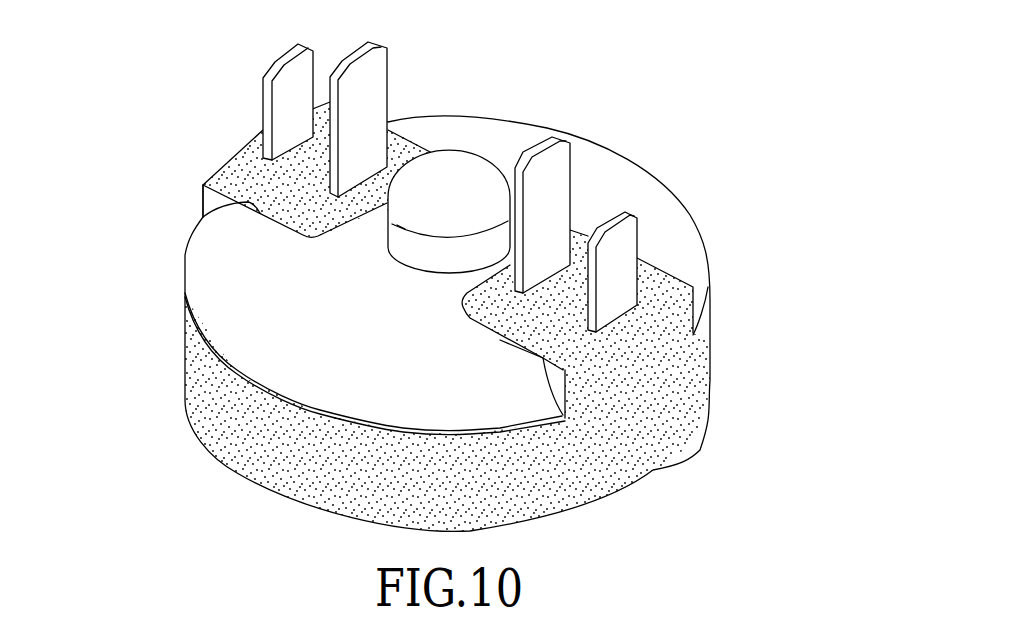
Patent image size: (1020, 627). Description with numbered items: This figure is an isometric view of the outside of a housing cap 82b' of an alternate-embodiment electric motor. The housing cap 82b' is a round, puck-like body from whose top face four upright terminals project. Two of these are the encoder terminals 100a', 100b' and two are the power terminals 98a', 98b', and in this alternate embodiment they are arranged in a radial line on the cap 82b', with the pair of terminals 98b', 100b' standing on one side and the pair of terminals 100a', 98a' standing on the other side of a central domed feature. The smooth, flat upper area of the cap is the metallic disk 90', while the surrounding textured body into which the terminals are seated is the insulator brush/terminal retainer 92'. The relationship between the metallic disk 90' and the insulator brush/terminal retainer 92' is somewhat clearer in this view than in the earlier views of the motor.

The housing cap 82b' is at (466, 343).
The metallic disk 90' is at (345, 310).
The insulator brush/terminal retainer 92' is at (596, 262).
The power terminal 98a' is at (689, 272).
The power terminal 98b' is at (230, 102).
The encoder terminal 100a' is at (604, 207).
The encoder terminal 100b' is at (418, 119).